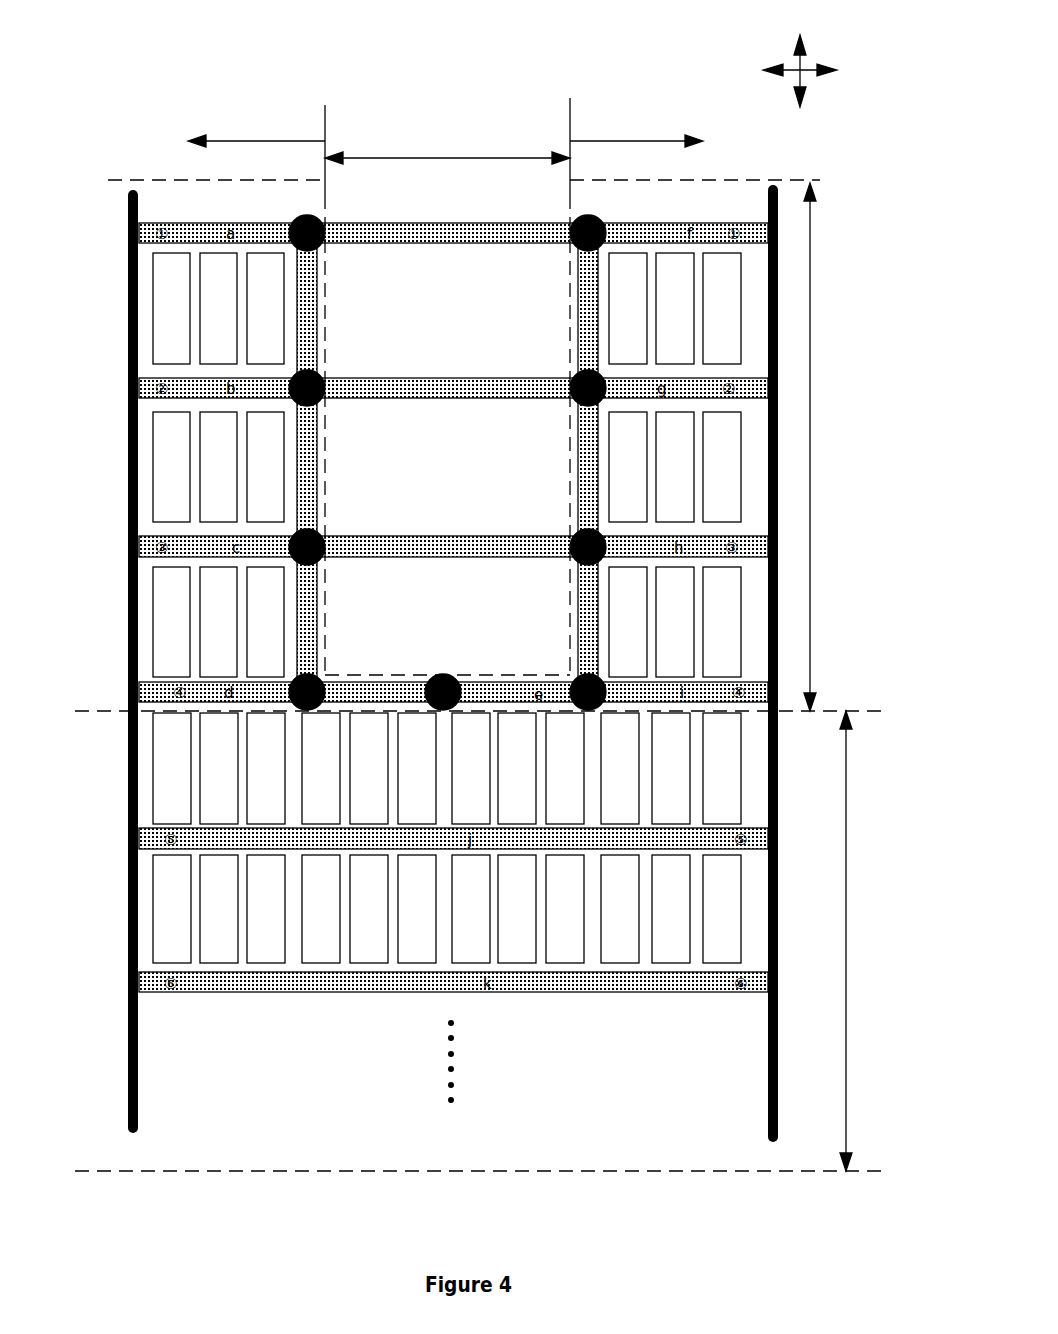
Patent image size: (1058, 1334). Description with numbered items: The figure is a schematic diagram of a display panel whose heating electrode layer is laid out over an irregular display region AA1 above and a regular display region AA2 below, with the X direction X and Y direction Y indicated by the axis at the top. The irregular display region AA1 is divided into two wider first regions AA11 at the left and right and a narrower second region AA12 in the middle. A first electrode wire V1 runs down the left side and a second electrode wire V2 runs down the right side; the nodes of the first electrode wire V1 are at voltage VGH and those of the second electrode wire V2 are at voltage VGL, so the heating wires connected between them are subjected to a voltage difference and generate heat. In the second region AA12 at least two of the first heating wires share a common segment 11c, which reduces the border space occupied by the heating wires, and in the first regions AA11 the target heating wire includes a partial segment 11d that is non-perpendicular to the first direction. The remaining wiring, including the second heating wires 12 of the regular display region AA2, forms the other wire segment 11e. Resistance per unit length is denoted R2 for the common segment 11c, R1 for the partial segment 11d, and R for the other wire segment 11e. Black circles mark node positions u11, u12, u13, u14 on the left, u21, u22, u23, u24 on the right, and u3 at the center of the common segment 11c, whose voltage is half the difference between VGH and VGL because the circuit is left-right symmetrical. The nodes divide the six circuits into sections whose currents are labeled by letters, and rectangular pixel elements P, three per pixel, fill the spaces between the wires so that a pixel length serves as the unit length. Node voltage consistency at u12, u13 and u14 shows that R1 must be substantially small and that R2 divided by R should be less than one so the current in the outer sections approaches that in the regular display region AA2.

The common segment 11c is at (408, 690).
The partial segment 11d is at (313, 460).
The other wire segment 11e is at (138, 374).
The second heating wire 12 is at (670, 992).
The pixel element P is at (166, 803).
The first electrode wire V1 is at (109, 670).
The second electrode wire V2 is at (800, 671).
The resistance of other wire segment R is at (453, 218).
The resistance of partial segment R1 is at (464, 462).
The resistance of common segment R2 is at (437, 693).
The node u11 is at (333, 232).
The node u12 is at (334, 388).
The node u13 is at (334, 547).
The node u14 is at (335, 675).
The node u21 is at (561, 231).
The node u22 is at (559, 388).
The node u23 is at (560, 547).
The node u24 is at (559, 675).
The node u3 is at (443, 675).
The irregular display region AA1 is at (838, 447).
The regular display region AA2 is at (874, 941).
The first region AA11 is at (445, 124).
The second region AA12 is at (447, 140).
The X direction X is at (816, 70).
The Y direction Y is at (800, 53).